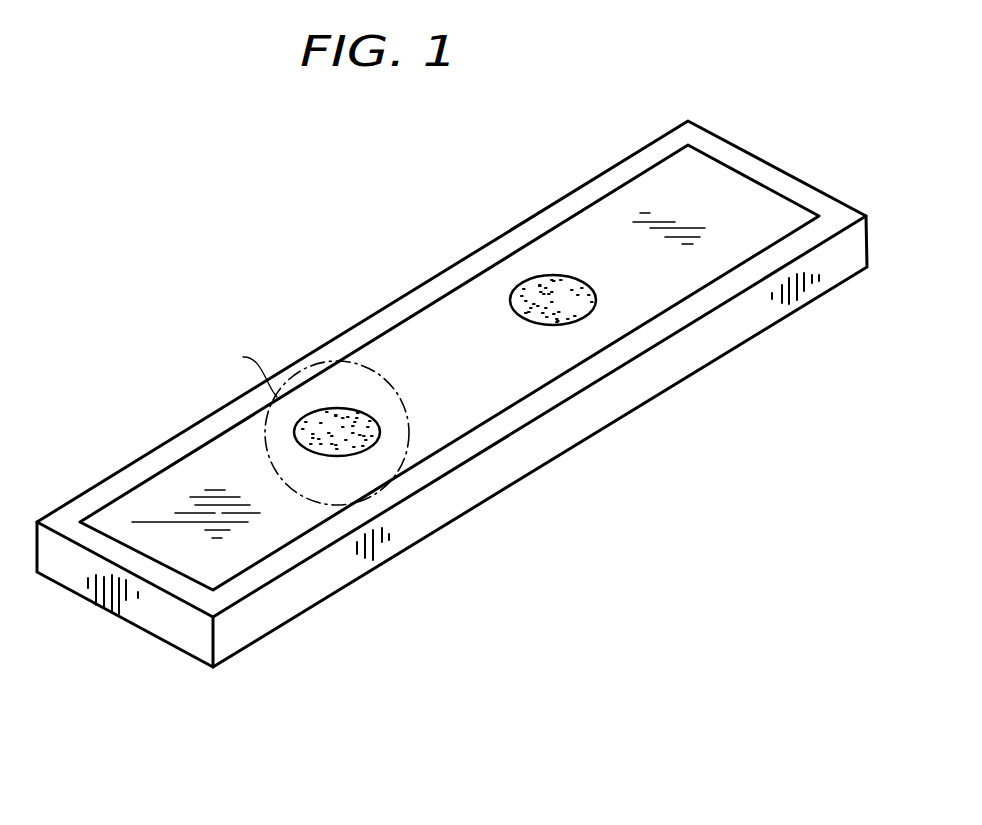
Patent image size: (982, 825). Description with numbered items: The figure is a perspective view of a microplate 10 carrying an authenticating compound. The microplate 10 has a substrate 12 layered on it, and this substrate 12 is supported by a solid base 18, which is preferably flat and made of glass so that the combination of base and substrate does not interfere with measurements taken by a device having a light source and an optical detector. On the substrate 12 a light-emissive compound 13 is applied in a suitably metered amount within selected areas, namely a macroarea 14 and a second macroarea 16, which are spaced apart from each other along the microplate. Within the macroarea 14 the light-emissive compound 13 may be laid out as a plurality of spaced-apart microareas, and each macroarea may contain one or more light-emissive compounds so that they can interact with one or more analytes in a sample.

The microplate 10 is at (452, 394).
The substrate 12 is at (753, 207).
The light-emissive compound 13 is at (357, 417).
The macroarea 14 is at (365, 375).
The macroarea 16 is at (527, 287).
The solid base 18 is at (615, 410).